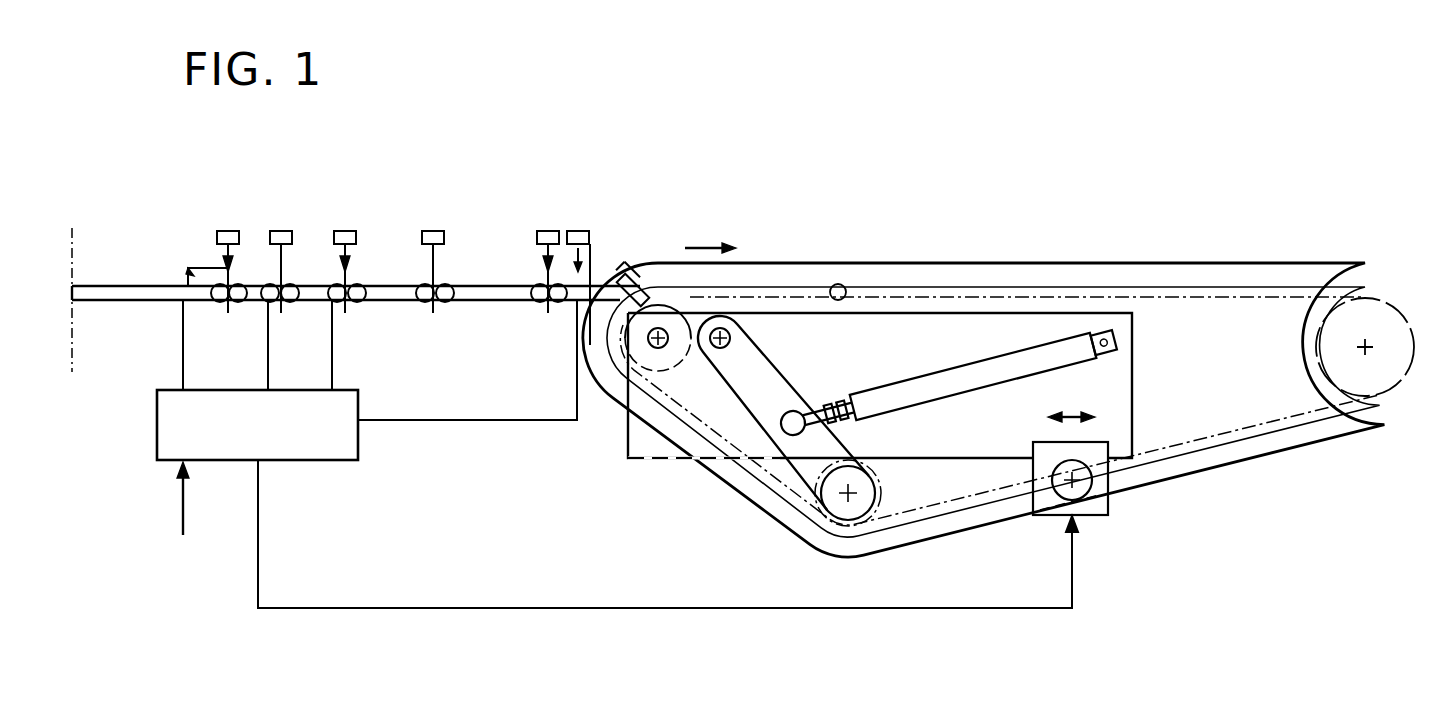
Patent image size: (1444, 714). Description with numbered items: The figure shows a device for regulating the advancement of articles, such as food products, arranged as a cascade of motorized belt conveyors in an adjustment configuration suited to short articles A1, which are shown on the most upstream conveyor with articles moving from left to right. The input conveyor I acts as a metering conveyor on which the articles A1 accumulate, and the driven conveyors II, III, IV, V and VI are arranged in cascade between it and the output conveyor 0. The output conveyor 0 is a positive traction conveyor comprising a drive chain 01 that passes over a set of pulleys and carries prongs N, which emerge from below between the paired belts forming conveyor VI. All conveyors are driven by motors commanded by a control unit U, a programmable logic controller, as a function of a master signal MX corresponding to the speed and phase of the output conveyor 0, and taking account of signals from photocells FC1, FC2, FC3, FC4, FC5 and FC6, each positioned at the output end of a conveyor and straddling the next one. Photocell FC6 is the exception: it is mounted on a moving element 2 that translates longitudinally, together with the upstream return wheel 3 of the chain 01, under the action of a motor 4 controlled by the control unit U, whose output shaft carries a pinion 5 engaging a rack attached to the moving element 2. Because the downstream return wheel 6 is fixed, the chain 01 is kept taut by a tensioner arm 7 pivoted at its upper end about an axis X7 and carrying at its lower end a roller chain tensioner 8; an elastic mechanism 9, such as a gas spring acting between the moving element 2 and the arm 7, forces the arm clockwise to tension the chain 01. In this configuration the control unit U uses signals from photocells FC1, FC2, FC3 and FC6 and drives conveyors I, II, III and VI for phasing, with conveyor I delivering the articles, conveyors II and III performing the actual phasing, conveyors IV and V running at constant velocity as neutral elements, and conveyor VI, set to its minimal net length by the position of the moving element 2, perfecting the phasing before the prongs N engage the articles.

The output conveyor 0 is at (902, 264).
The drive chain 01 is at (1279, 429).
The moving element 2 is at (1129, 382).
The upstream return wheel 3 is at (618, 392).
The motor 4 is at (1106, 508).
The pinion 5 is at (1033, 462).
The downstream return wheel 6 is at (1363, 300).
The arm 7 is at (778, 372).
The roller chain tensioner 8 is at (878, 483).
The elastic mechanism 9 is at (968, 374).
The axis X7 is at (732, 338).
The prongs N is at (628, 284).
The control unit U is at (157, 420).
The master signal MX is at (182, 514).
The article A1 is at (196, 268).
The photocell FC1 is at (226, 265).
The photocell FC2 is at (279, 265).
The photocell FC3 is at (343, 265).
The photocell FC4 is at (432, 265).
The photocell FC5 is at (546, 265).
The photocell FC6 is at (579, 281).
The input conveyor I is at (129, 286).
The driven conveyor II is at (252, 286).
The driven conveyor III is at (307, 286).
The driven conveyor IV is at (388, 286).
The driven conveyor V is at (494, 286).
The driven conveyor VI is at (605, 286).